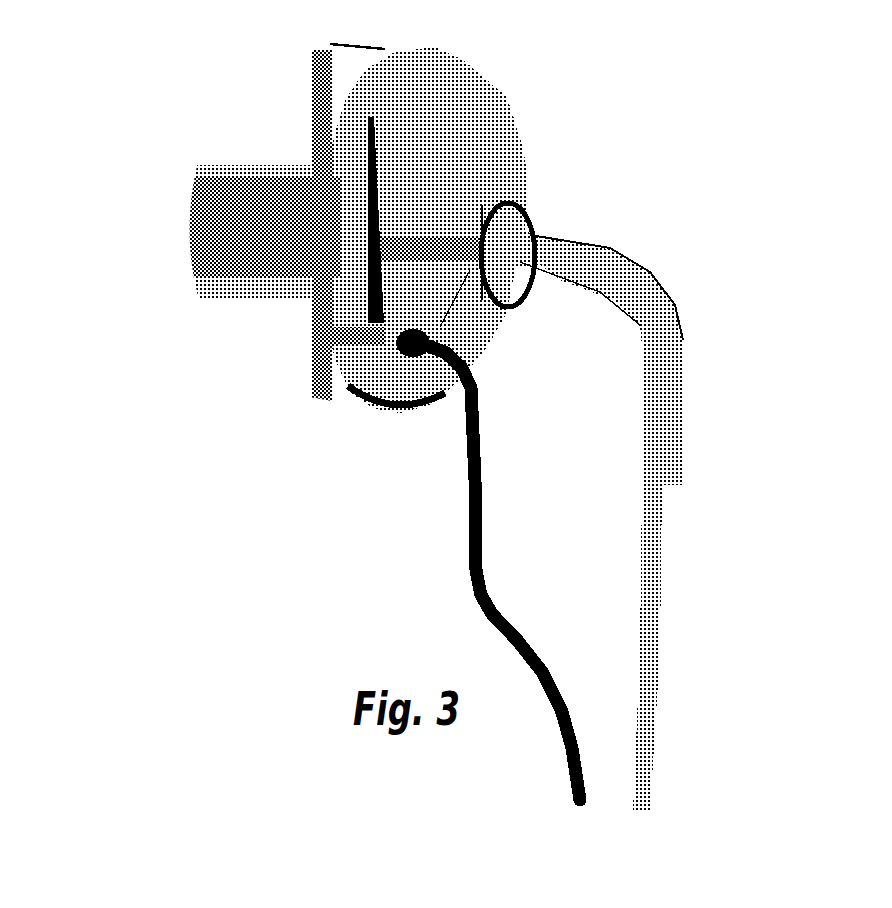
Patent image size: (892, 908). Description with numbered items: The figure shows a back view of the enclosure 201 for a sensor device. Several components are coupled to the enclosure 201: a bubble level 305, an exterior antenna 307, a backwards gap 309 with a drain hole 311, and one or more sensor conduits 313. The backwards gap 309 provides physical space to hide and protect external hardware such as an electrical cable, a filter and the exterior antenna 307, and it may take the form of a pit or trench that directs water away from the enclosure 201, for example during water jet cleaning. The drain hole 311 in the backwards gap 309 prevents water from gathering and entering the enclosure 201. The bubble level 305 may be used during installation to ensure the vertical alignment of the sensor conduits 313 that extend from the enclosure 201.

The enclosure 201 is at (280, 246).
The bubble level 305 is at (238, 122).
The exterior antenna 307 is at (502, 458).
The backwards gap 309 is at (837, 367).
The drain hole 311 is at (357, 448).
The sensor conduits 313 is at (657, 516).